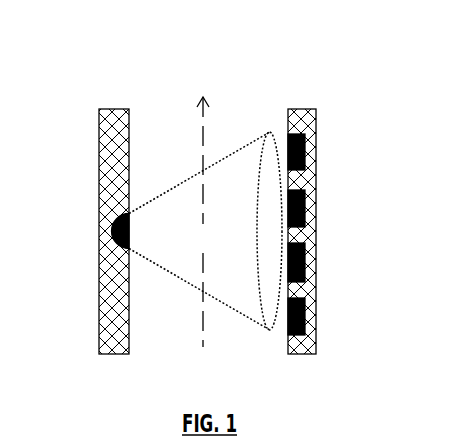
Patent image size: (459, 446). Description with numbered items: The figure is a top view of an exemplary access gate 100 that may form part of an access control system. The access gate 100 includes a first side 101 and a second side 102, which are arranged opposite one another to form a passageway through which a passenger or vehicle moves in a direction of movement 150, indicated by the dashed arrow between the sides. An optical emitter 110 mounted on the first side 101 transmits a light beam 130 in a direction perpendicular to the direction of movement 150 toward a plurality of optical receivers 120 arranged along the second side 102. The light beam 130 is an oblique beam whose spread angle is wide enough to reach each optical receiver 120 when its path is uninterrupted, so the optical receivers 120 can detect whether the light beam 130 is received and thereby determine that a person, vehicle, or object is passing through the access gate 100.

The access gate 100 is at (108, 36).
The first side 101 is at (105, 108).
The optical emitter 110 is at (113, 221).
The direction of movement 150 is at (203, 141).
The light beam 130 is at (261, 256).
The second side 102 is at (310, 108).
The optical receivers 120 is at (305, 293).